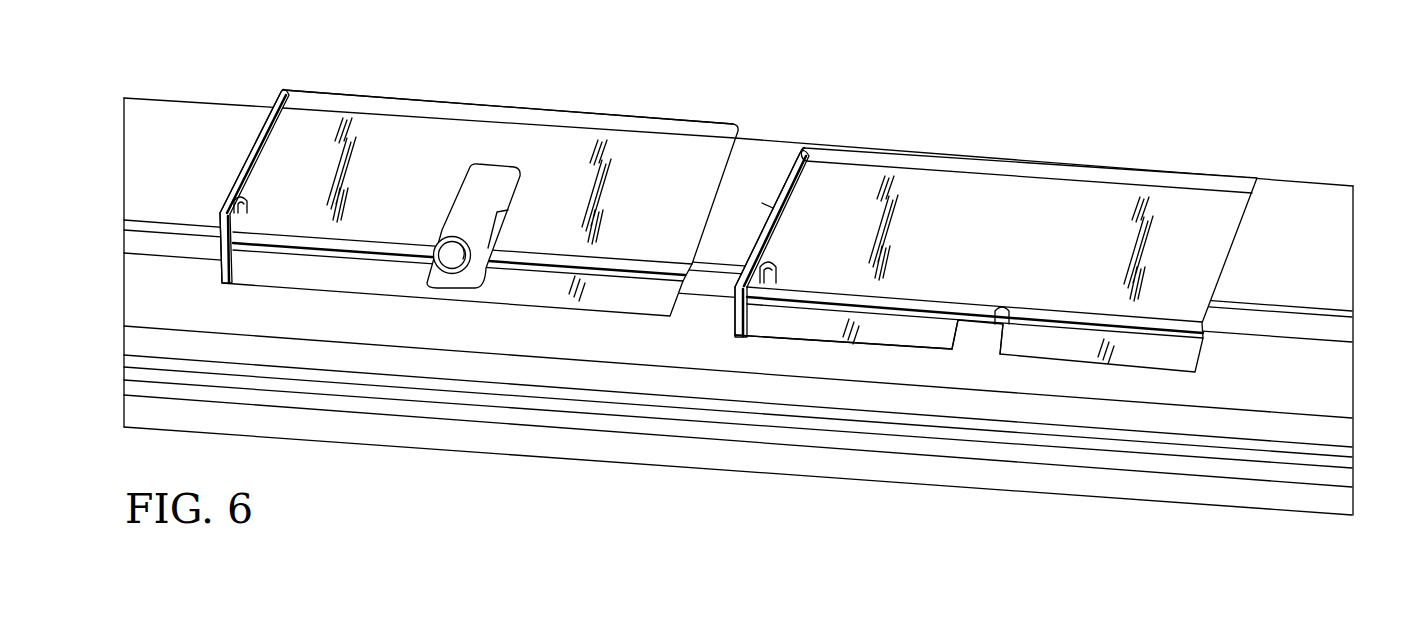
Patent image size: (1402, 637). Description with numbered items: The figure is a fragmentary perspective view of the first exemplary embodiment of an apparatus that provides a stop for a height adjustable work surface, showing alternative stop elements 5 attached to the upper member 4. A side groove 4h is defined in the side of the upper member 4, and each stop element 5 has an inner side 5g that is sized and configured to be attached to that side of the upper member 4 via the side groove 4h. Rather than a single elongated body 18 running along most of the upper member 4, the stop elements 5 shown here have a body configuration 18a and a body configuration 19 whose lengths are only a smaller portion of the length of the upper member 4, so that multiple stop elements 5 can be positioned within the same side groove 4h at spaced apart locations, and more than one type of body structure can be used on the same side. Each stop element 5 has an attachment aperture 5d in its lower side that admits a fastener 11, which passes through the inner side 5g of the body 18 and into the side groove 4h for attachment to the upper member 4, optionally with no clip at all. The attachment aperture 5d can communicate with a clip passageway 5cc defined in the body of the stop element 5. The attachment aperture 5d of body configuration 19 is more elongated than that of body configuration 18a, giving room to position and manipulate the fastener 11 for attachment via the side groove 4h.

The upper member 4 is at (1217, 390).
The side groove 4h is at (1290, 323).
The stop element 5 is at (275, 91).
The clip passageway 5cc is at (776, 200).
The attachment aperture 5d is at (482, 192).
The inner side 5g is at (222, 268).
The fastener 11 is at (453, 268).
The body 18 is at (639, 78).
The body configuration 18a is at (1081, 154).
The body configuration 19 is at (538, 104).